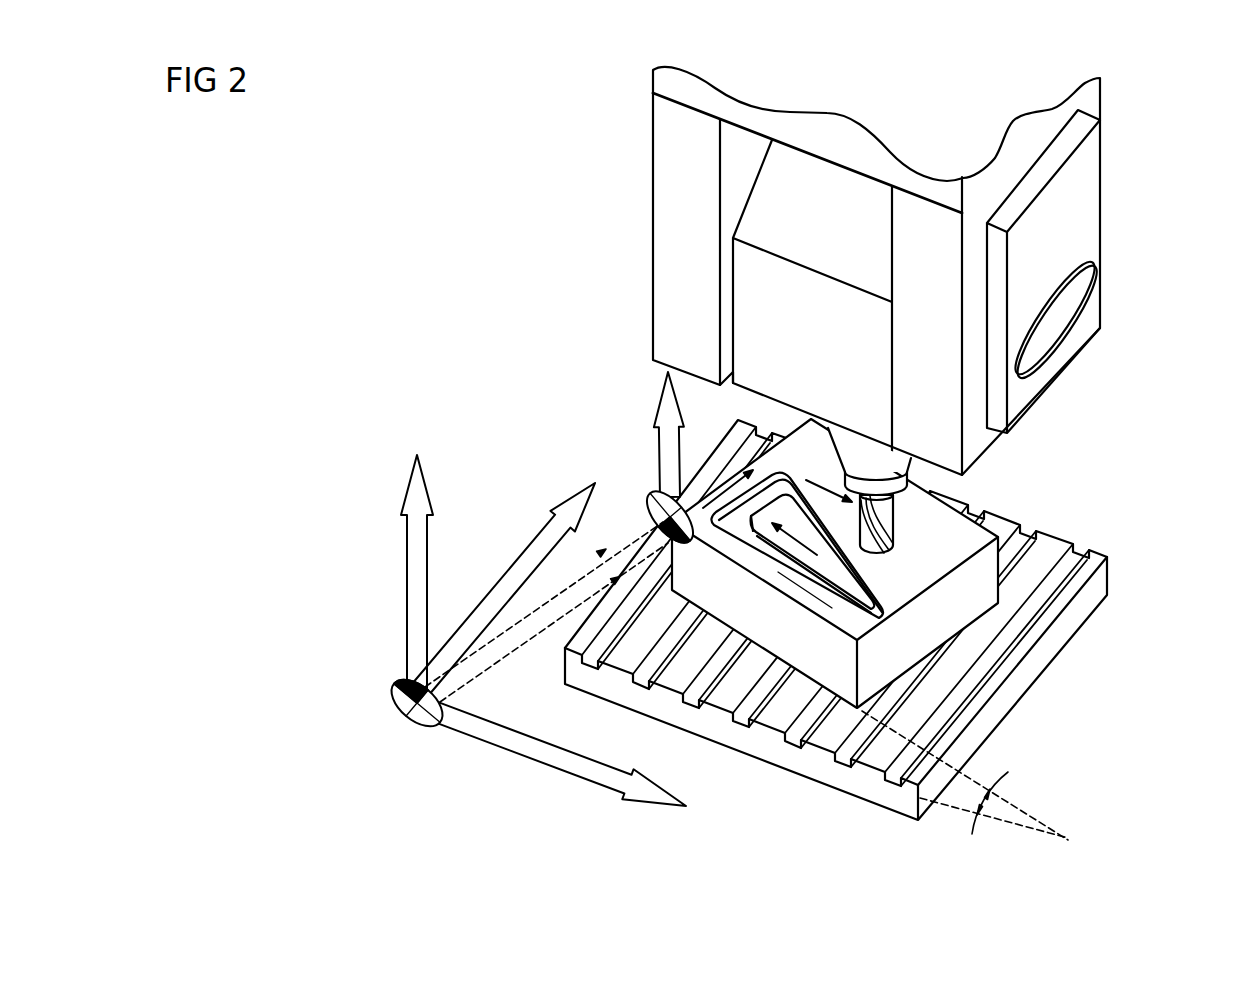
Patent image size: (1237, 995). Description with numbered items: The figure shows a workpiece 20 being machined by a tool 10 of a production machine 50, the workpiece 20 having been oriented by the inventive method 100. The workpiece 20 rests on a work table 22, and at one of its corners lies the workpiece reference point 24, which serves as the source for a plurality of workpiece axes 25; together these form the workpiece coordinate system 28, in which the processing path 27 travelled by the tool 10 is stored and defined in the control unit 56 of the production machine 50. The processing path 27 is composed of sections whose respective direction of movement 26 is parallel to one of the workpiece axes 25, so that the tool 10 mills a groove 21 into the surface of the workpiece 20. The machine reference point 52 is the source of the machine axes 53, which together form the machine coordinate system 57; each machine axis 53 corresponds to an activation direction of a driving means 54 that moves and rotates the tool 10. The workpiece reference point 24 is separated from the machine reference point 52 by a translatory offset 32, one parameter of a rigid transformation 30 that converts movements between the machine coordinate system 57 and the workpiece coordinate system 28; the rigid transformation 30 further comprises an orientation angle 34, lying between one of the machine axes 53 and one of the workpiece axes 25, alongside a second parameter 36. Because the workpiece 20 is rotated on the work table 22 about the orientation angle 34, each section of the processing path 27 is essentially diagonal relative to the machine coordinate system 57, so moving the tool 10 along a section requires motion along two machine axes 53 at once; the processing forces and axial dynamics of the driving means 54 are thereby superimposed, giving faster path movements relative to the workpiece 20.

The tool 10 is at (878, 523).
The workpiece 20 is at (987, 527).
The groove 21 is at (834, 598).
The work table 22 is at (860, 791).
The workpiece reference point 24 is at (660, 504).
The workpiece axes 25 is at (750, 470).
The direction of movement 26 is at (722, 514).
The processing path 27 is at (813, 506).
The workpiece coordinate system 28 is at (657, 412).
The rigid transformation 30 is at (470, 667).
The translatory offset 32 is at (554, 631).
The orientation angle 34 is at (1000, 774).
The second parameter 36 is at (1007, 801).
The production machine 50 is at (667, 191).
The machine reference point 52 is at (402, 718).
The machine axes 53 is at (406, 538).
The driving means 54 is at (1216, 162).
The control unit 56 is at (1216, 196).
The machine coordinate system 57 is at (407, 600).
The inventive method 100 is at (401, 152).